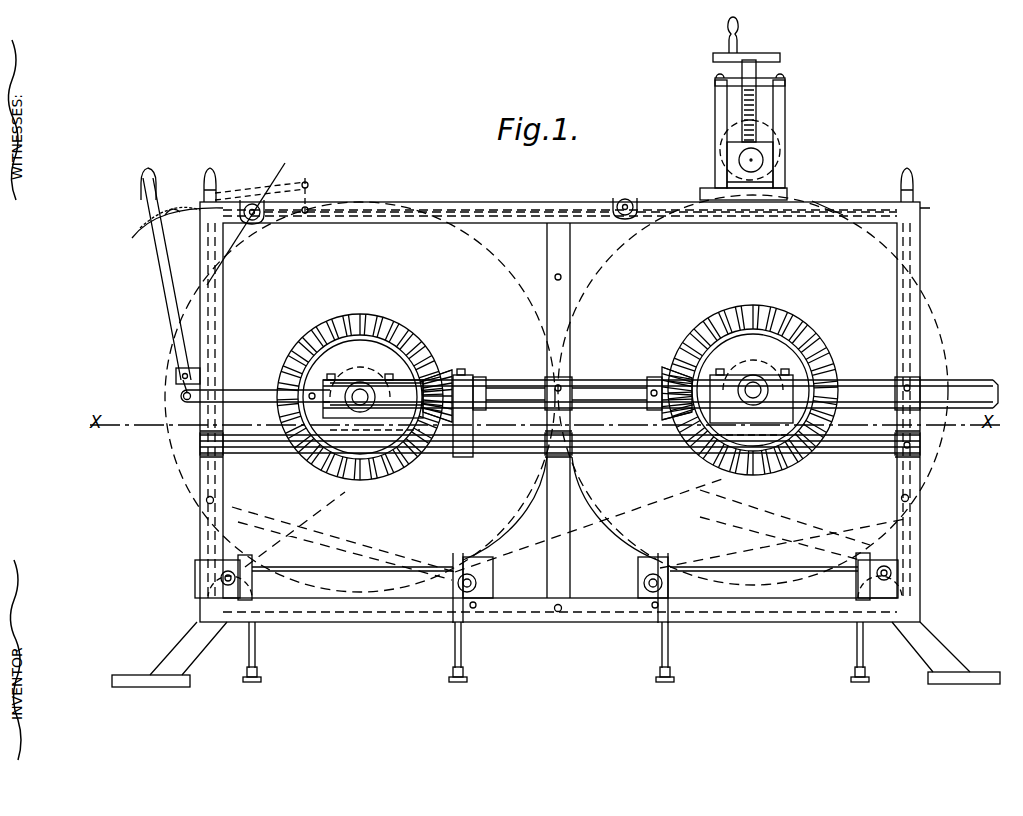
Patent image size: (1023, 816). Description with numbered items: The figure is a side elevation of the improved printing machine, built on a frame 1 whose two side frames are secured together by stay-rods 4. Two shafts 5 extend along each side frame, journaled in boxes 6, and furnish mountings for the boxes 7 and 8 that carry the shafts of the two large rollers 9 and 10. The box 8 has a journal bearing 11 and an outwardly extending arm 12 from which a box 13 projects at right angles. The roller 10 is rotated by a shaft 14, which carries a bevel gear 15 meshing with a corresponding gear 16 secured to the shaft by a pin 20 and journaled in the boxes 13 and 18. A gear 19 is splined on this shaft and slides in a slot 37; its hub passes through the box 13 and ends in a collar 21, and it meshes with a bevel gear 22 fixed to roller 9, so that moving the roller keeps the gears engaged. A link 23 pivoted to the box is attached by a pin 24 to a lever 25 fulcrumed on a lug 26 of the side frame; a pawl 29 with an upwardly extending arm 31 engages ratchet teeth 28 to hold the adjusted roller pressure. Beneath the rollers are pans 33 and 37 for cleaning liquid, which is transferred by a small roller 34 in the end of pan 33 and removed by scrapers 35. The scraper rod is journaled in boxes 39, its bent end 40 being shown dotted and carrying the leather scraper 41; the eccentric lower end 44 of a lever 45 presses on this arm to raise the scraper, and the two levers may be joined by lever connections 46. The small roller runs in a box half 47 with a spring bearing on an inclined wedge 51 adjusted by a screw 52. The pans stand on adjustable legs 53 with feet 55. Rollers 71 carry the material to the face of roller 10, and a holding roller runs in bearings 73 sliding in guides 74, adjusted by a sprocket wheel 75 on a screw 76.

The frame 1 is at (577, 200).
The stay-rods 4 is at (571, 241).
The shafts 5 is at (636, 440).
The boxes 6 is at (205, 446).
The box 7 is at (808, 352).
The box 8 is at (350, 467).
The roller 9 is at (360, 397).
The roller 10 is at (753, 390).
The journal bearing 11 is at (409, 220).
The arm 12 is at (763, 146).
The box 13 is at (770, 163).
The shaft 14 is at (718, 112).
The bevel gear 15 is at (800, 376).
The gear 16 is at (655, 380).
The box 18 is at (573, 385).
The gear 19 is at (442, 379).
The pin 20 is at (640, 408).
The collar 21 is at (145, 231).
The bevel gear 22 is at (368, 318).
The link 23 is at (242, 391).
The pin 24 is at (183, 396).
The lever 25 is at (170, 315).
The lug 26 is at (176, 376).
The teeth 28 is at (173, 209).
The pawl 29 is at (146, 219).
The arm 31 is at (143, 189).
The pan 33 is at (356, 606).
The small roller 34 is at (215, 561).
The scrapers 35 is at (488, 572).
The pan 37 is at (498, 394).
The boxes 39 is at (480, 585).
The end of rod 40 is at (322, 529).
The scraper 41 is at (461, 560).
The lower end 44 is at (207, 501).
The lever 45 is at (218, 181).
The lever connections 46 is at (308, 181).
The half of box 47 is at (238, 575).
The inclined wedge 51 is at (233, 624).
The screw 52 is at (205, 605).
The legs 53 is at (256, 648).
The foot 55 is at (262, 679).
The rollers 71 is at (628, 198).
The bearings 73 is at (728, 32).
The guides 74 is at (713, 57).
The sprocket wheel 75 is at (780, 58).
The screw 76 is at (757, 96).